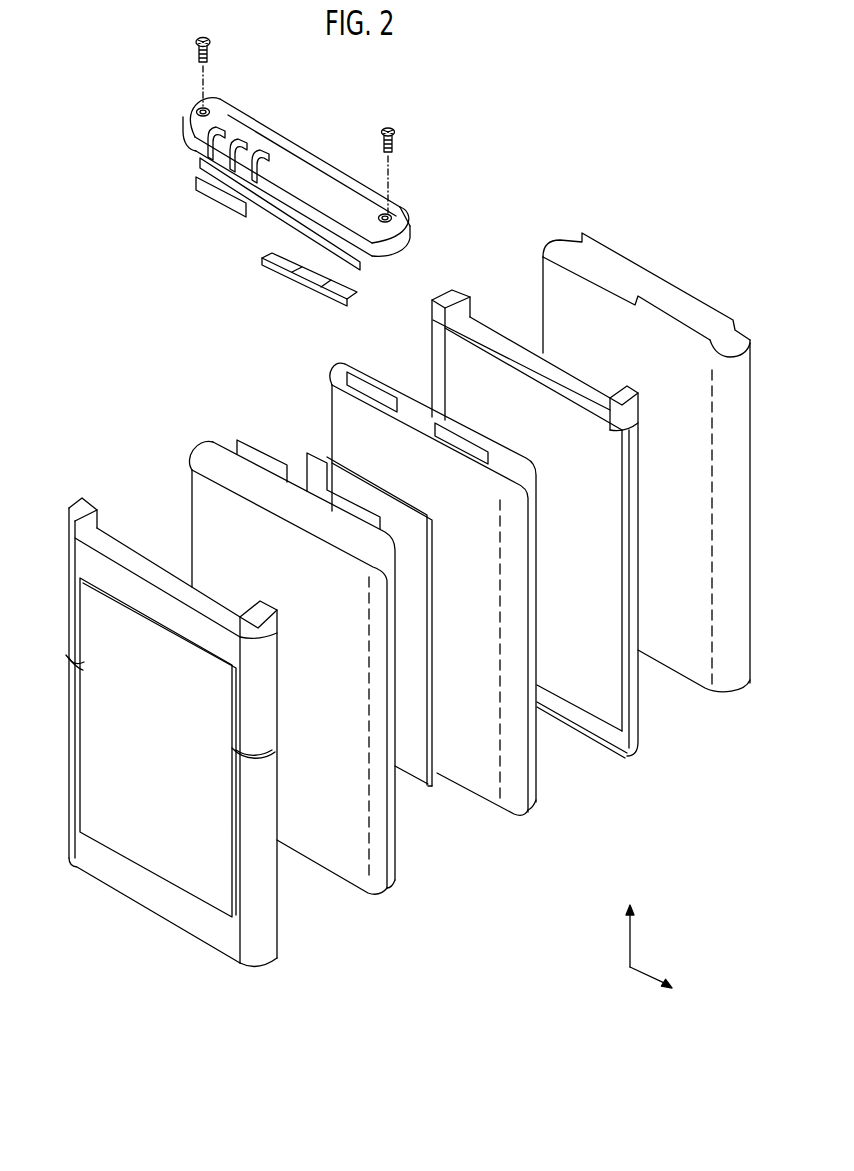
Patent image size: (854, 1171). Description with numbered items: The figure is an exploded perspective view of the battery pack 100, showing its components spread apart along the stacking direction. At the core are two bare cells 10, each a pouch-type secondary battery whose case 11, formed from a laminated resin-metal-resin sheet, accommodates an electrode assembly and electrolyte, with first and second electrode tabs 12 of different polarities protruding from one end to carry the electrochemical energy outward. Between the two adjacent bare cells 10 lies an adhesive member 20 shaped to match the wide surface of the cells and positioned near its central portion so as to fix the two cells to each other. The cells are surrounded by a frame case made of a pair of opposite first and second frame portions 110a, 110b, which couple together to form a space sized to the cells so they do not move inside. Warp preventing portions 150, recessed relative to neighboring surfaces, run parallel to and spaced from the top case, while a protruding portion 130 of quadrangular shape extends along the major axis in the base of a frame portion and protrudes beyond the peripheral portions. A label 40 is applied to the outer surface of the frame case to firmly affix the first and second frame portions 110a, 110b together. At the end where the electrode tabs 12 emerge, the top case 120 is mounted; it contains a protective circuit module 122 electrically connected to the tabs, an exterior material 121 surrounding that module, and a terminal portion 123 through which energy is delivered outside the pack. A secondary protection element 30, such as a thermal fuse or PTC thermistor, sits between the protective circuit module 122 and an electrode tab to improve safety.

The battery pack 100 is at (593, 77).
The top case 120 is at (254, 154).
The exterior material 121 is at (183, 117).
The protective circuit module 122 is at (278, 216).
The terminal portion 123 is at (258, 168).
The secondary protection element 30 is at (272, 299).
The bare cell 10 is at (355, 642).
The case 11 is at (218, 505).
The first and second electrode tabs 12 is at (328, 470).
The adhesive member 20 is at (423, 795).
The first frame portion 110a is at (174, 732).
The second frame portion 110b is at (643, 763).
The protruding portion 130 is at (222, 885).
The warp preventing portion 150 is at (240, 755).
The label 40 is at (716, 705).